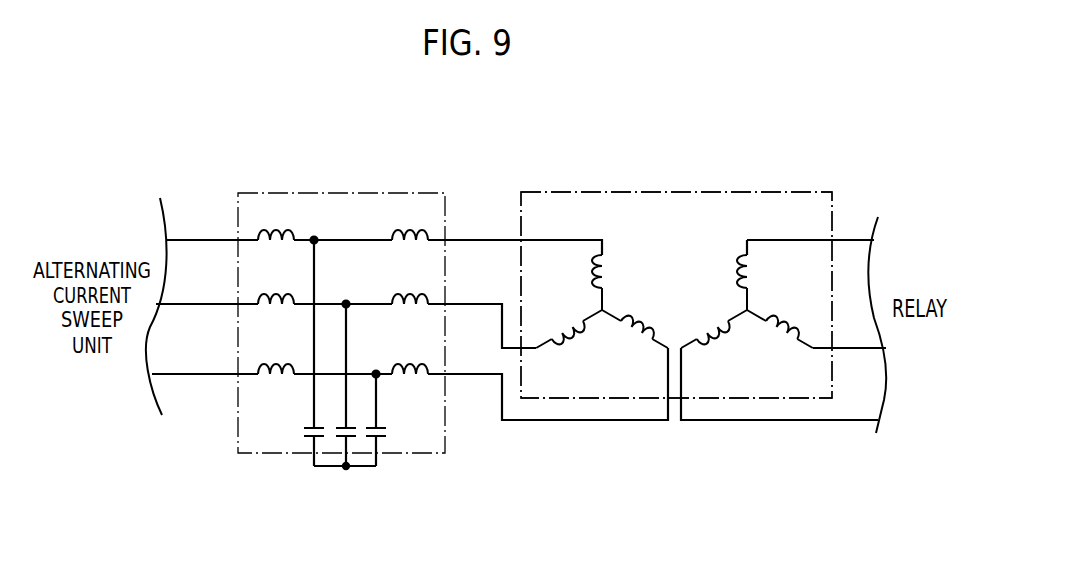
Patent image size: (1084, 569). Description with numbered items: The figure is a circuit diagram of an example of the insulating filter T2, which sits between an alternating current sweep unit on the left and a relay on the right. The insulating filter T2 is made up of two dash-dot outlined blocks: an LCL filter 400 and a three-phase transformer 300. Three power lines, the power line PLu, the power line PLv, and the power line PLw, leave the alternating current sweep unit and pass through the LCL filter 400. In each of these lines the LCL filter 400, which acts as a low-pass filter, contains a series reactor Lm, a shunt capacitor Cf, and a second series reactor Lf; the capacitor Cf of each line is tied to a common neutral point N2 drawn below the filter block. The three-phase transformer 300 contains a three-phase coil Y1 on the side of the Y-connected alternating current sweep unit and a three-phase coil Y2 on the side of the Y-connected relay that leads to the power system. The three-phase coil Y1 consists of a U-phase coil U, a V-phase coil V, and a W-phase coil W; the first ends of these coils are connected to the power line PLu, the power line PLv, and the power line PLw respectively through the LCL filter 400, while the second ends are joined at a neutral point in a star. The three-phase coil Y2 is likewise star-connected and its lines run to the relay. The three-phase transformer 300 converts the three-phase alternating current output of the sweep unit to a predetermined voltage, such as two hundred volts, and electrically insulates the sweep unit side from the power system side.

The insulating filter T2 is at (618, 130).
The LCL filter 400 is at (398, 193).
The three-phase transformer 300 is at (778, 192).
The power line PLu is at (199, 240).
The power line PLv is at (198, 304).
The power line PLw is at (198, 374).
The reactor Lm is at (276, 234).
The reactor Lf is at (420, 234).
The capacitor Cf is at (402, 401).
The neutral point N2 is at (348, 470).
The three-phase coil Y1 is at (614, 279).
The three-phase coil Y2 is at (724, 297).
The U-phase coil U is at (609, 282).
The V-phase coil V is at (571, 323).
The W-phase coil W is at (637, 323).